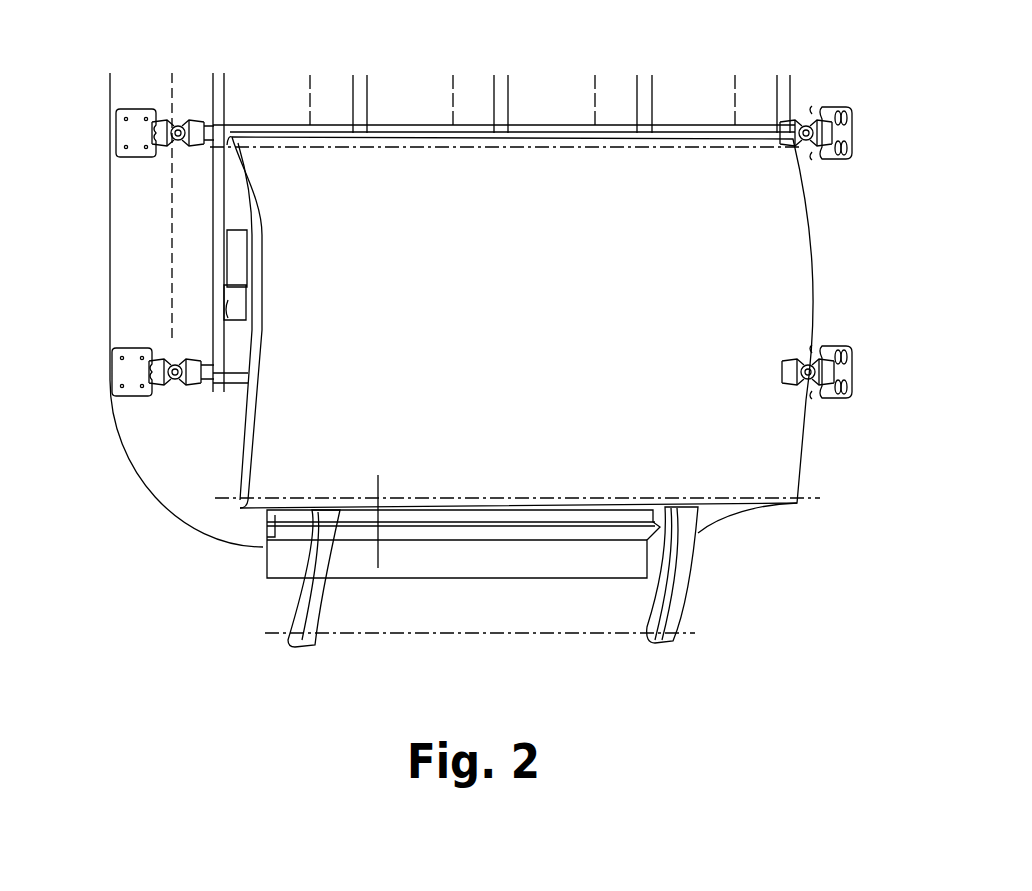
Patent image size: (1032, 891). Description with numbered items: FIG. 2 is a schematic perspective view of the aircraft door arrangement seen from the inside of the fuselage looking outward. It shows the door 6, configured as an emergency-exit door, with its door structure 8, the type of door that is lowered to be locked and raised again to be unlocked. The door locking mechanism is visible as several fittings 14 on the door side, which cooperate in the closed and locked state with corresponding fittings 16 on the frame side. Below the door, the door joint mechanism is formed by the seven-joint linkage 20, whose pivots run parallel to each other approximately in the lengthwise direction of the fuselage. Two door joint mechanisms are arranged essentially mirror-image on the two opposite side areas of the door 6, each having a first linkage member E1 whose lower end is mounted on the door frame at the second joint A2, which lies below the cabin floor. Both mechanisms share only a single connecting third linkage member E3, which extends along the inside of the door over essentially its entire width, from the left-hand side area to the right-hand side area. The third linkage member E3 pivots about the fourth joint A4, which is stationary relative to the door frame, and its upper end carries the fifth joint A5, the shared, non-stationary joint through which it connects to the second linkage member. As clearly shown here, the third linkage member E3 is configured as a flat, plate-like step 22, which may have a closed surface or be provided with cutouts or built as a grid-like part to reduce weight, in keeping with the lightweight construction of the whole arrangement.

The door 6 is at (220, 450).
The door structure 8 is at (568, 125).
The fittings on the door side 14 is at (180, 125).
The fittings on the door frame side 16 is at (132, 131).
The seven-joint linkage 20 is at (720, 622).
The step 22 is at (690, 269).
The second joint A2 is at (460, 637).
The fourth joint A4 is at (537, 499).
The fifth joint A5 is at (577, 145).
The first linkage member E1 is at (312, 603).
The third linkage member E3 is at (778, 320).